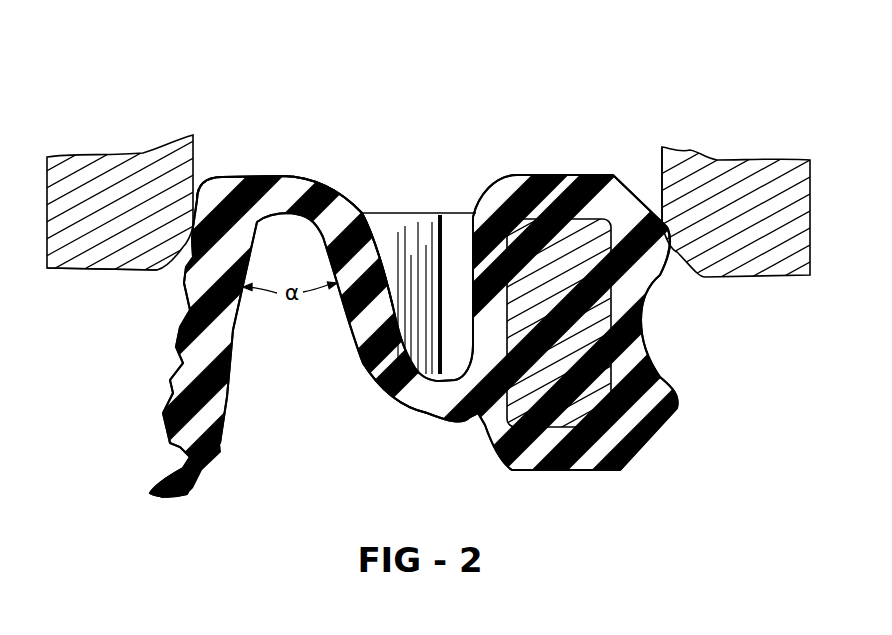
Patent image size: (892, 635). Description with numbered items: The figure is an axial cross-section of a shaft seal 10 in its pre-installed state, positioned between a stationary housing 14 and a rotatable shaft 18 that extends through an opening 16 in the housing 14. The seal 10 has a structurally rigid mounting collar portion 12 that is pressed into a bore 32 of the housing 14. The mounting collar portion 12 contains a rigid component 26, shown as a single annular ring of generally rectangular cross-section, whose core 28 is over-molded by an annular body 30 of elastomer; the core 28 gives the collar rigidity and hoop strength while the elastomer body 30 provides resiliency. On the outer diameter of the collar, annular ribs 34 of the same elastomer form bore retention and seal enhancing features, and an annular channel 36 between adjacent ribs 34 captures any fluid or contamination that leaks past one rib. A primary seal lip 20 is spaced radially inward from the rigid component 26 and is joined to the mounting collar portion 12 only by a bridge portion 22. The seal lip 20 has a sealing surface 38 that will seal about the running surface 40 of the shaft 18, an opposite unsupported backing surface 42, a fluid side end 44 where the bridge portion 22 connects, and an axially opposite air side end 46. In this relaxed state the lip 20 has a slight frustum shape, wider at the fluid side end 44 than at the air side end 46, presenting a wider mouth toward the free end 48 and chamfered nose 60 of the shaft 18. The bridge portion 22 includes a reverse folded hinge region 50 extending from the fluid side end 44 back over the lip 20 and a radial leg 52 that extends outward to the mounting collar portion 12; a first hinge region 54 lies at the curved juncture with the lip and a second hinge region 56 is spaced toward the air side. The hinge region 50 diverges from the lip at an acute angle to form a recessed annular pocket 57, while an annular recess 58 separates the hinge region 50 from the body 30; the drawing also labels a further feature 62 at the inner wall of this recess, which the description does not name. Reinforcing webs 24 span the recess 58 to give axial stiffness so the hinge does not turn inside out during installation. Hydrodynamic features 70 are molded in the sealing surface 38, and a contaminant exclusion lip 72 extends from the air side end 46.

The shaft seal 10 is at (371, 127).
The mounting collar portion 12 is at (562, 175).
The housing 14 is at (815, 175).
The opening 16 is at (275, 108).
The shaft 18 is at (98, 152).
The primary seal lip 20 is at (177, 447).
The bridge portion 22 is at (350, 65).
The reinforcing webs 24 is at (429, 205).
The rigid component 26 is at (566, 210).
The rigid core 28 is at (598, 418).
The body of elastomeric material 30 is at (660, 428).
The bore 32 is at (660, 166).
The annular ribs 34 is at (650, 262).
The annular channel 36 is at (642, 320).
The sealing surface 38 is at (170, 390).
The running surface 40 is at (200, 176).
The backing surface 42 is at (233, 362).
The fluid side end 44 is at (287, 175).
The air side end 46 is at (203, 453).
The free end of the shaft 48 is at (90, 273).
The hinge region 50 is at (363, 330).
The radial leg 52 is at (455, 422).
The first hinge region 54 is at (295, 200).
The second hinge region 56 is at (430, 412).
The recessed annular pocket 57 is at (312, 250).
The annular recess 58 is at (400, 245).
The chamfered nose 60 is at (187, 258).
The lip 62 is at (375, 248).
The hydrodynamic features 70 is at (177, 360).
The contaminant exclusion lip 72 is at (150, 495).